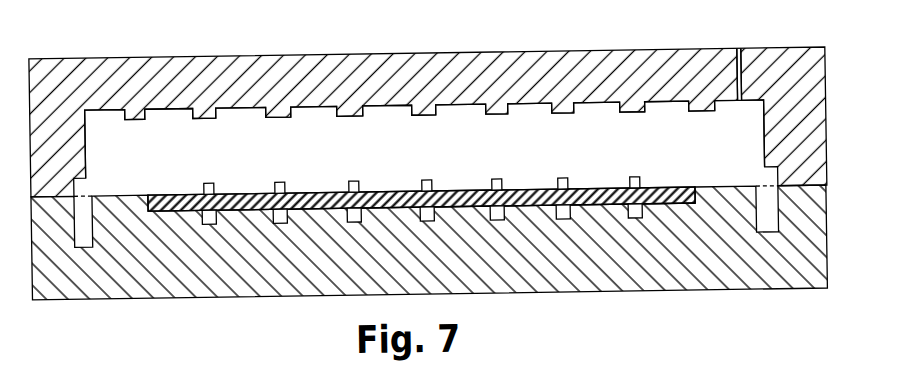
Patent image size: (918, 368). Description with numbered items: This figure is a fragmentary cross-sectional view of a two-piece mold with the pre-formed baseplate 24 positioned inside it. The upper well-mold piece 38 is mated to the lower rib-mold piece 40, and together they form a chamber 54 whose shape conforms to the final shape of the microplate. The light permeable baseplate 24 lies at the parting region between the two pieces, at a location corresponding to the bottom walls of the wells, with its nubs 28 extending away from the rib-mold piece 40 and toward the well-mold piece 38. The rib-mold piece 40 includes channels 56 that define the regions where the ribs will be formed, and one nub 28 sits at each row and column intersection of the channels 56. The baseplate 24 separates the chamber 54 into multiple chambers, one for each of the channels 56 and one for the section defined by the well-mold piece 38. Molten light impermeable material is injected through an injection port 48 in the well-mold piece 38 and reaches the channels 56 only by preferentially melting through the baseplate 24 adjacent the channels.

The baseplate 24 is at (231, 190).
The nubs 28 is at (354, 181).
The well-mold piece 38 is at (759, 52).
The rib-mold piece 40 is at (771, 295).
The injection port 48 is at (740, 53).
The chamber 54 is at (667, 134).
The channels 56 is at (352, 221).